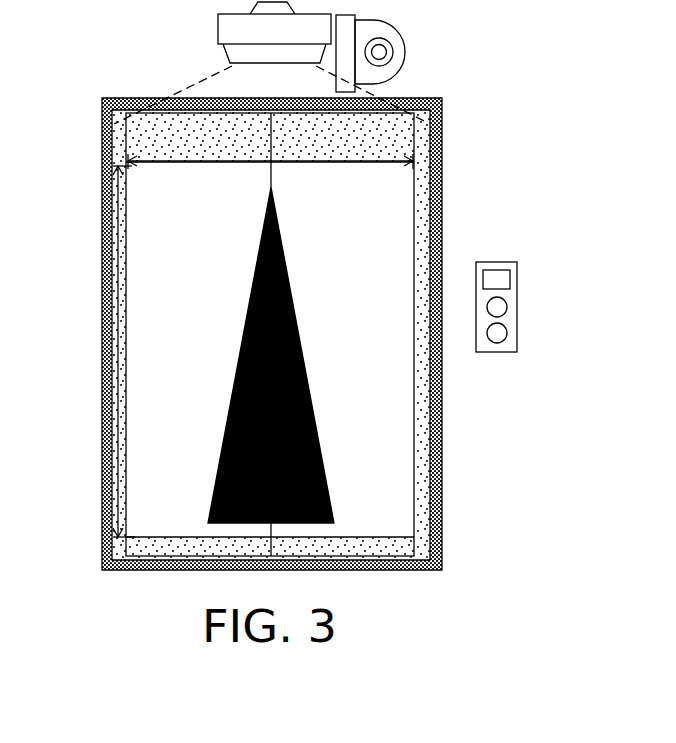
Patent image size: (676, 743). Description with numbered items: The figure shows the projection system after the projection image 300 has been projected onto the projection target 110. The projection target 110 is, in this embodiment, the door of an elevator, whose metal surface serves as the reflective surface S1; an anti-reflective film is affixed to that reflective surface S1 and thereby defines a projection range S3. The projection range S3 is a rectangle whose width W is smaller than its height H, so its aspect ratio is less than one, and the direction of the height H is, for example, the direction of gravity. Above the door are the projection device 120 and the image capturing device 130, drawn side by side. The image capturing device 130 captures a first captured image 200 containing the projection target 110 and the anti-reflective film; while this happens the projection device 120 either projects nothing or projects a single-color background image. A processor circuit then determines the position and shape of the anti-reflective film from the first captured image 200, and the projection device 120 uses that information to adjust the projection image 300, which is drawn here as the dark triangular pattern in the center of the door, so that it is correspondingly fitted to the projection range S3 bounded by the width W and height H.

The projection target 110 is at (331, 334).
The first captured image 200 is at (438, 493).
The projection device 120 is at (218, 28).
The image capturing device 130 is at (402, 37).
The projection image 300 is at (323, 458).
The reflective surface S1 is at (160, 140).
The projection range S3 is at (388, 413).
The width W is at (330, 163).
The height H is at (118, 352).